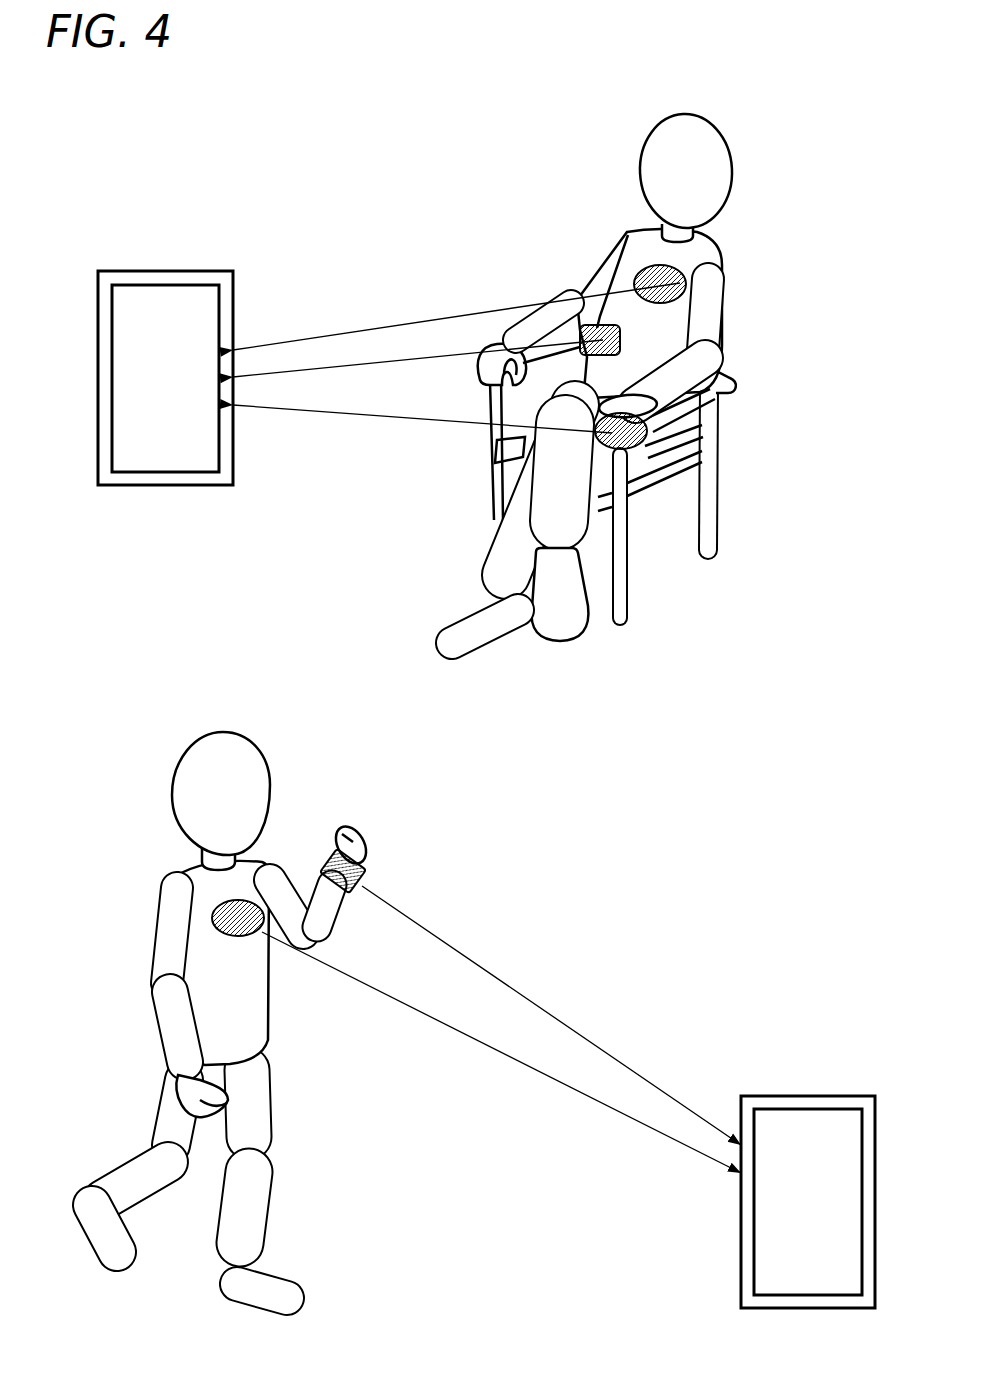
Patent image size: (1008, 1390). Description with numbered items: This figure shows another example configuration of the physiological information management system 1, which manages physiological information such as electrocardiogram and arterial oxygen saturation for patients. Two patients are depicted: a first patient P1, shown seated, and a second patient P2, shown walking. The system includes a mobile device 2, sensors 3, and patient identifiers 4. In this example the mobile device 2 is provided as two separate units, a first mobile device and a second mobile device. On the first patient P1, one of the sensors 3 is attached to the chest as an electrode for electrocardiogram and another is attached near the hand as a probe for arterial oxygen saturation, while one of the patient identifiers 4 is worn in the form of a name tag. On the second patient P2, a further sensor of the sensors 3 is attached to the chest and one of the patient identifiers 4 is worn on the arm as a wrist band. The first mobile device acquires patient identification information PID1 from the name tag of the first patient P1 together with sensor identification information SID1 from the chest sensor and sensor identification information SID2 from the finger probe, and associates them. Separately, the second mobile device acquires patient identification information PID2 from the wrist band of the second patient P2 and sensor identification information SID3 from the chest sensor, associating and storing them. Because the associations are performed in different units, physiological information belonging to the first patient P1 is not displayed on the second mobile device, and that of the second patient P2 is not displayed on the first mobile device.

The physiological information management system 1 is at (763, 722).
The mobile device 2 is at (130, 255).
The sensors 3 is at (682, 287).
The patient identifiers 4 is at (620, 338).
The first patient P1 is at (752, 130).
The second patient P2 is at (165, 731).
The sensor identification information of the first sensor SID1 is at (456, 316).
The patient identification information of the first patient PID1 is at (418, 365).
The sensor identification information of the second sensor SID2 is at (422, 428).
The patient identification information of the second patient PID2 is at (551, 1015).
The sensor identification information of the third sensor SID3 is at (501, 1052).